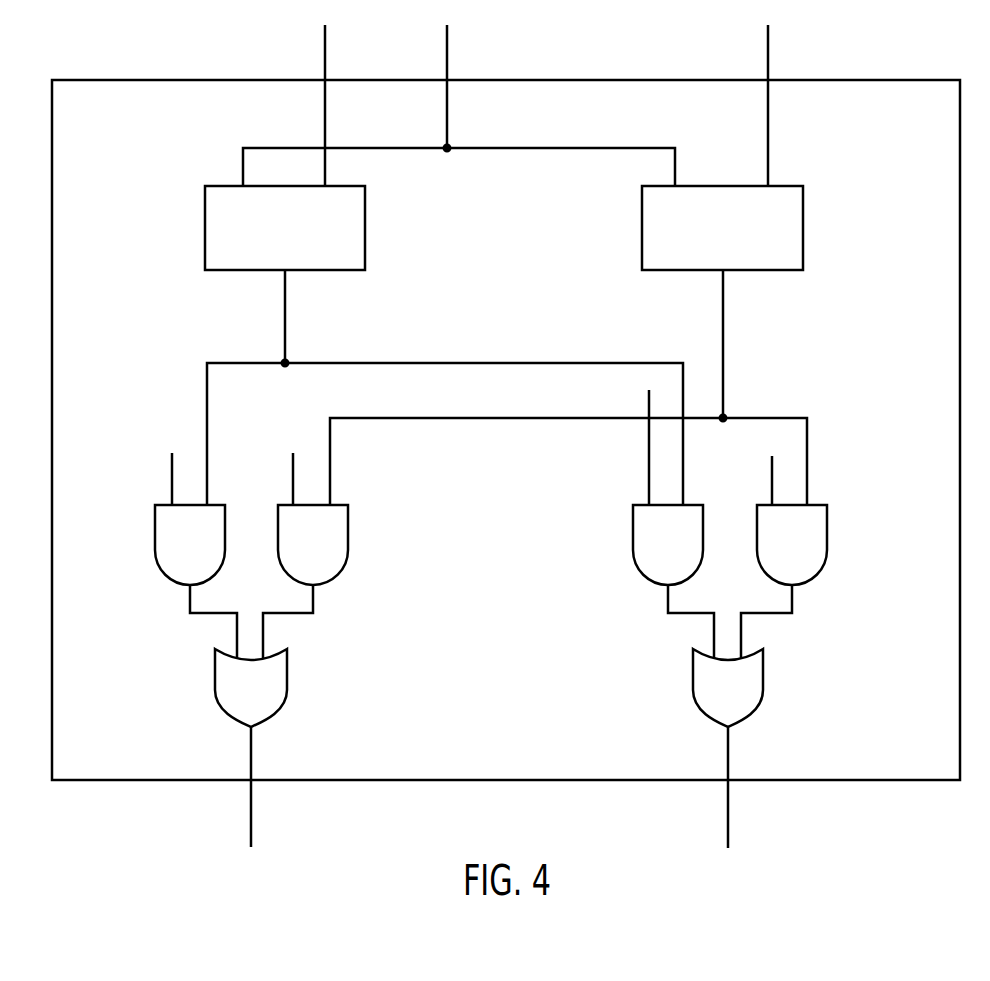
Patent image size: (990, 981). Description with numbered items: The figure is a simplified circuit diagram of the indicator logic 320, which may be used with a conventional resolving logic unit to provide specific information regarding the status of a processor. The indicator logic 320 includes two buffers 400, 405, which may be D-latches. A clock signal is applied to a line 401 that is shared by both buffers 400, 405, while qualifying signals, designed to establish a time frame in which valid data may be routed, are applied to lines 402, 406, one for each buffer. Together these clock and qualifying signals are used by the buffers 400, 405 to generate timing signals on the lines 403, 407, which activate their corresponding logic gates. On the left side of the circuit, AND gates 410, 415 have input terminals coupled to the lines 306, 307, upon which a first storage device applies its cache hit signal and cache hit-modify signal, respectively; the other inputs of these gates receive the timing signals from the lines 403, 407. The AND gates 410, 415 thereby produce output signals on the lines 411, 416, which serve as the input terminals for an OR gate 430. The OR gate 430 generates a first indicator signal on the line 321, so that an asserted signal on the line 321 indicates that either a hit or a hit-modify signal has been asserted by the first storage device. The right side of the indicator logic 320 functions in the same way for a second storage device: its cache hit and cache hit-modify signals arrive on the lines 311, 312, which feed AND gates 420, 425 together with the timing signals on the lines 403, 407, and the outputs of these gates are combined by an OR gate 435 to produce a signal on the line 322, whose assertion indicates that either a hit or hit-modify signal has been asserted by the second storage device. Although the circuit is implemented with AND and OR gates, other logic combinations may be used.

The indicator logic 320 is at (912, 776).
The buffer 400 is at (320, 268).
The buffer 405 is at (757, 268).
The line 401 is at (447, 62).
The line 402 is at (325, 62).
The line 406 is at (768, 62).
The line 403 is at (285, 326).
The line 407 is at (723, 326).
The line 306 is at (172, 478).
The line 307 is at (293, 478).
The line 311 is at (649, 478).
The line 312 is at (772, 478).
The AND gate 410 is at (170, 561).
The AND gate 415 is at (293, 561).
The AND gate 420 is at (648, 561).
The AND gate 425 is at (772, 561).
The line 411 is at (190, 607).
The line 416 is at (313, 607).
The OR gate 430 is at (231, 697).
The OR gate 435 is at (708, 697).
The line 321 is at (251, 816).
The line 322 is at (728, 816).